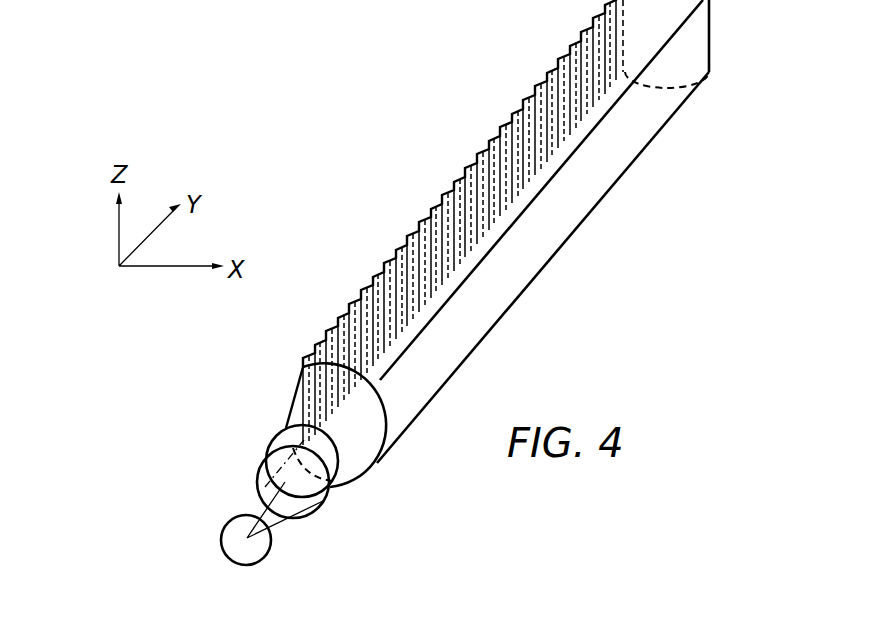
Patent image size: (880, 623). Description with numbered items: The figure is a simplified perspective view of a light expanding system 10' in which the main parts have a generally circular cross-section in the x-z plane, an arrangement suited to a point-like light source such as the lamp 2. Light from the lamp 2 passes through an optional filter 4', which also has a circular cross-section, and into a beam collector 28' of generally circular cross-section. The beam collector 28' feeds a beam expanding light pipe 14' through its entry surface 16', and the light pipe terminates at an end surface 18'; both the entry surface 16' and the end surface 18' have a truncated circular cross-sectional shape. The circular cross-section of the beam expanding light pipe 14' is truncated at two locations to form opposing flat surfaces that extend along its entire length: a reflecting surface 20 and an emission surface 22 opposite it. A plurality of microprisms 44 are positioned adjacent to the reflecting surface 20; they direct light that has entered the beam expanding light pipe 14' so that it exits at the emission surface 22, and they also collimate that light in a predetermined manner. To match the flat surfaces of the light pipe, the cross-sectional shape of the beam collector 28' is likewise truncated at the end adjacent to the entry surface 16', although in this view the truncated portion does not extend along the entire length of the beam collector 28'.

The lamp 2 is at (225, 523).
The filter 4' is at (325, 497).
The light expanding system 10' is at (461, 190).
The beam expanding light pipe 14' is at (457, 214).
The entry surface 16' is at (383, 438).
The end surface 18' is at (707, 44).
The reflecting surface 20 is at (529, 100).
The emission surface 22 is at (519, 277).
The beam collector 28' is at (268, 452).
The microprisms 44 is at (588, 34).